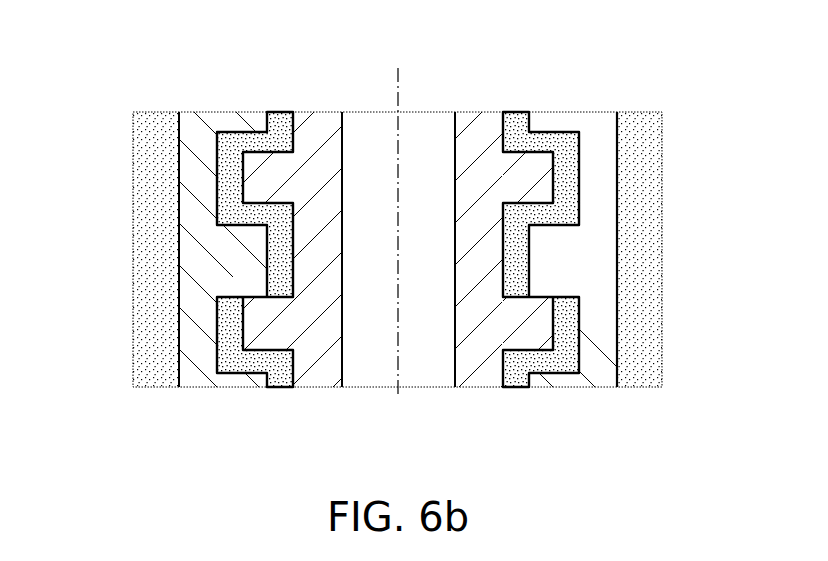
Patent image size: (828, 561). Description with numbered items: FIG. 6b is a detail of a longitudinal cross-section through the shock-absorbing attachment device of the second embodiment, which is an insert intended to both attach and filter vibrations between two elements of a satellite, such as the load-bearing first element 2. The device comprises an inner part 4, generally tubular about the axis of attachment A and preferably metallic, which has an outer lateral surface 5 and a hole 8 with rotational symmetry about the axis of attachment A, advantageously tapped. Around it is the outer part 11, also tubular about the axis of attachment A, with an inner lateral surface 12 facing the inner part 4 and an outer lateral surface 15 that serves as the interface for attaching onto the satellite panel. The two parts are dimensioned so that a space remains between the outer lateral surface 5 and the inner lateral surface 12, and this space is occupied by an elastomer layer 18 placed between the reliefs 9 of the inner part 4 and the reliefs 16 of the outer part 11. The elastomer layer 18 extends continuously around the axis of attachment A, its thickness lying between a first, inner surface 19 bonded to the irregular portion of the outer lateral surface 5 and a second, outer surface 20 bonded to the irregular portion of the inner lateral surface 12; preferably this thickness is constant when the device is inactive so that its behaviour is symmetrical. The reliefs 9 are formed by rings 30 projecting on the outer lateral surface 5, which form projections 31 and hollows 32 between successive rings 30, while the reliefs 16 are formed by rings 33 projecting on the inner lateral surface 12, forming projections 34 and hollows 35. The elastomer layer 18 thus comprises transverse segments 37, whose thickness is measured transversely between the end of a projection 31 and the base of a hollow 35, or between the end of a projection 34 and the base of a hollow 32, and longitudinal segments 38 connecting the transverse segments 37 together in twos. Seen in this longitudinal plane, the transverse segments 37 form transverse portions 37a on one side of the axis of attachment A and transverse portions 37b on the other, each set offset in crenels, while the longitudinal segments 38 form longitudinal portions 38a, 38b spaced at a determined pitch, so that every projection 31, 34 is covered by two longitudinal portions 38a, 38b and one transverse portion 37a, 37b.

The first element 2 is at (663, 252).
The inner part 4 is at (400, 280).
The outer lateral surface 5 is at (400, 280).
The hole 8 is at (422, 217).
The reliefs 9 is at (473, 281).
The outer part 11 is at (619, 149).
The inner lateral surface 12 is at (481, 281).
The outer lateral surface 15 is at (642, 252).
The reliefs 16 is at (160, 221).
The elastomer layer 18 is at (395, 246).
The first surface 19 is at (485, 249).
The second surface 20 is at (502, 283).
The rings 30 is at (279, 194).
The projections 31 is at (473, 281).
The hollows 32 is at (473, 249).
The rings 33 is at (179, 221).
The projections 34 is at (160, 221).
The hollows 35 is at (160, 221).
The transverse segments 37 is at (404, 252).
The transverse portions 37a is at (222, 168).
The transverse portions 37b is at (404, 252).
The longitudinal segments 38 is at (395, 263).
The longitudinal portions 38a is at (395, 263).
The longitudinal portions 38b is at (395, 252).
The axis of attachment A is at (402, 73).